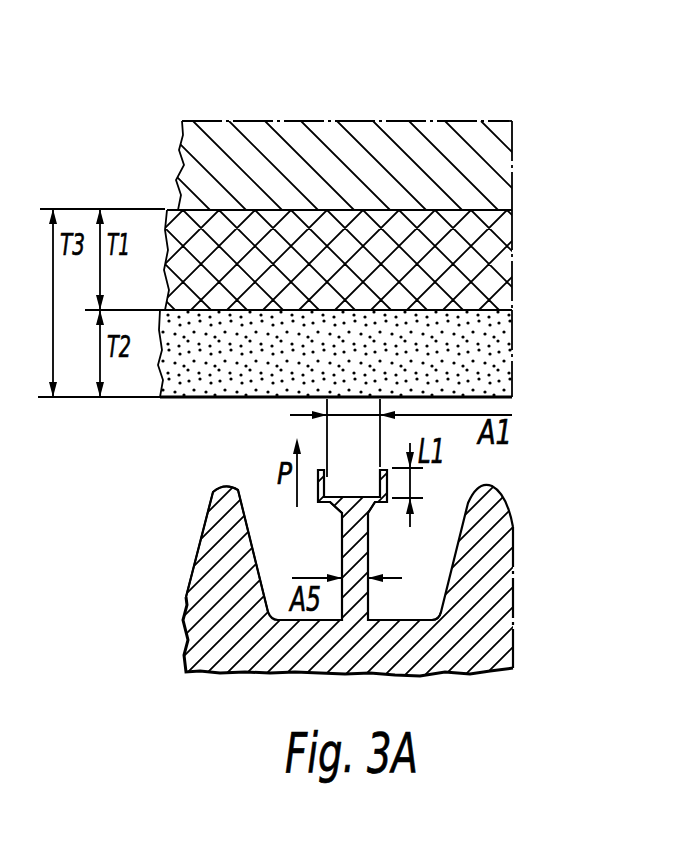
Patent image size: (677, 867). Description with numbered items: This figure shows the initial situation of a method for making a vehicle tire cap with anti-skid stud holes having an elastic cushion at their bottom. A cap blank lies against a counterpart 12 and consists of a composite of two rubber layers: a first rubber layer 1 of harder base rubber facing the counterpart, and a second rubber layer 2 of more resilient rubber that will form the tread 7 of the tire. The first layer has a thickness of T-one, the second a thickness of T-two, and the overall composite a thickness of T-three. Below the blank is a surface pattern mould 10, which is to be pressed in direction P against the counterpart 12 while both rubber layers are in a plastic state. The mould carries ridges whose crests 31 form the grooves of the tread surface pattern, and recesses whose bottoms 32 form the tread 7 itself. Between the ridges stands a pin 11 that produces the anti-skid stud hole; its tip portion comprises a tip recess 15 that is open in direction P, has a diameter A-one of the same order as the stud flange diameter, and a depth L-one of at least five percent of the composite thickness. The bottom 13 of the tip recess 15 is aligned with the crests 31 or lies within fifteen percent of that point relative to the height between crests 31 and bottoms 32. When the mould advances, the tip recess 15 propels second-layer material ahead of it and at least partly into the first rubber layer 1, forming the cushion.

The counterpart 12 is at (338, 125).
The first rubber layer 1 is at (497, 262).
The second rubber layer 2 is at (497, 348).
The tread 7 is at (177, 406).
The surface pattern mould 10 is at (503, 556).
The crest of ridge 31 is at (219, 470).
The pin 11 is at (368, 548).
The bottom of tip recess 13 is at (344, 480).
The tip recess 15 is at (361, 486).
The bottom of recess 32 is at (419, 604).